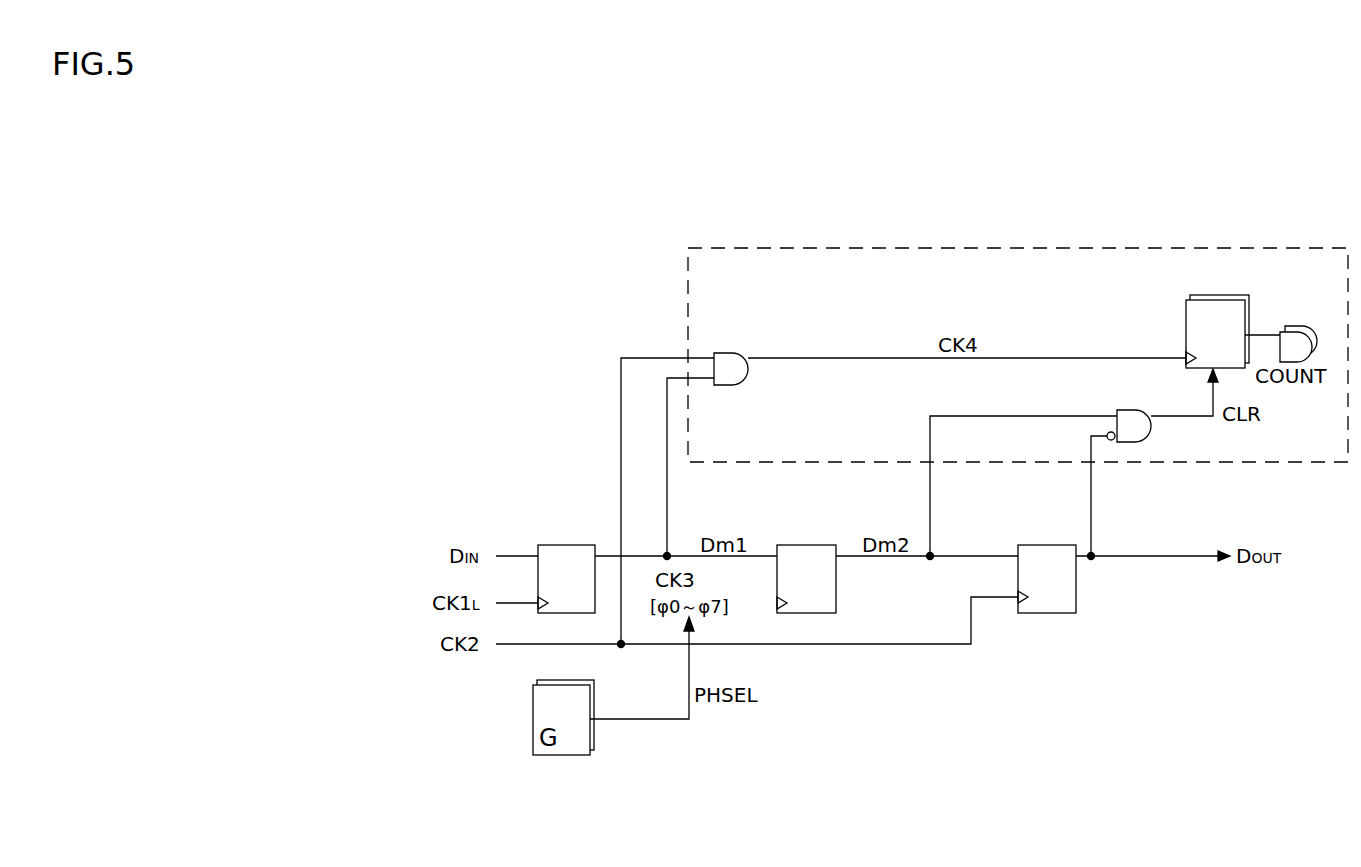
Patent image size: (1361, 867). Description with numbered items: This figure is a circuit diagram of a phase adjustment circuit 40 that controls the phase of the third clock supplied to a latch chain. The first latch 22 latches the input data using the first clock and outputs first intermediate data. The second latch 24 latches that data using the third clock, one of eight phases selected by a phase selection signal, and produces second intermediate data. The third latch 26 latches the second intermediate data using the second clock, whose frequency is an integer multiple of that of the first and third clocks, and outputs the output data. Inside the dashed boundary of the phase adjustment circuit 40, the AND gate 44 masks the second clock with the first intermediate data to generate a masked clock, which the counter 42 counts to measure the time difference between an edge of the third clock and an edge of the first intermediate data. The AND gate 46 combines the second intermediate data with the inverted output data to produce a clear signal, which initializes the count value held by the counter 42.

The first latch 22 is at (556, 545).
The second latch 24 is at (796, 545).
The third latch 26 is at (1036, 545).
The phase adjustment circuit 40 is at (1018, 248).
The counter 42 is at (1220, 300).
The AND gate 44 is at (724, 353).
The AND gate 46 is at (1127, 410).